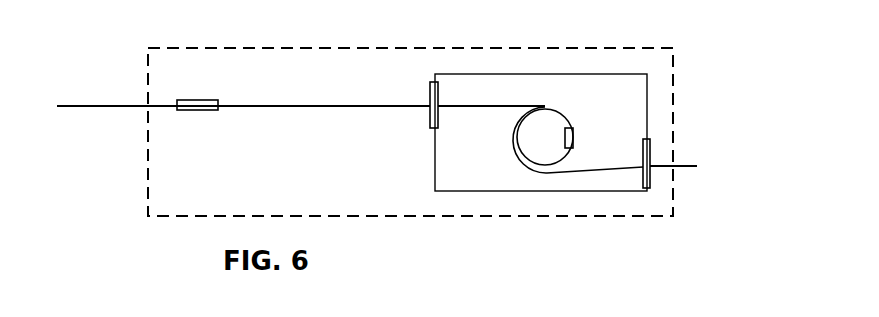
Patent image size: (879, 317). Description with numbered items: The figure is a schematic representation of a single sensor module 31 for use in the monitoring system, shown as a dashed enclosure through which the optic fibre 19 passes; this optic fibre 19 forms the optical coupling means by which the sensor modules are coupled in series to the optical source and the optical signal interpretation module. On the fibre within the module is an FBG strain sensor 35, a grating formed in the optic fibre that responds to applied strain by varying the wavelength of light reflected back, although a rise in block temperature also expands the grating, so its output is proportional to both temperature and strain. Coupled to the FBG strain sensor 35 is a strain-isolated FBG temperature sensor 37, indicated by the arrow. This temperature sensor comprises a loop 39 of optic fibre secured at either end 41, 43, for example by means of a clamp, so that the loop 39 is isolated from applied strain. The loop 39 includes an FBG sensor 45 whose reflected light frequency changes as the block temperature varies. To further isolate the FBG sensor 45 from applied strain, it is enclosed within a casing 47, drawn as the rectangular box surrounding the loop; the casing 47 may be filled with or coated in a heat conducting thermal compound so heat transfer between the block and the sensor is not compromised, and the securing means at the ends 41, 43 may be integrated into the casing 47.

The optic fibre 19 is at (665, 165).
The sensor module 31 is at (148, 80).
The FBG strain sensor 35 is at (183, 106).
The strain-isolated FBG temperature sensor 37 is at (675, 85).
The loop 39 is at (508, 152).
The end of loop 41 is at (432, 100).
The end of loop 43 is at (646, 172).
The FBG sensor 45 is at (569, 130).
The casing 47 is at (435, 157).